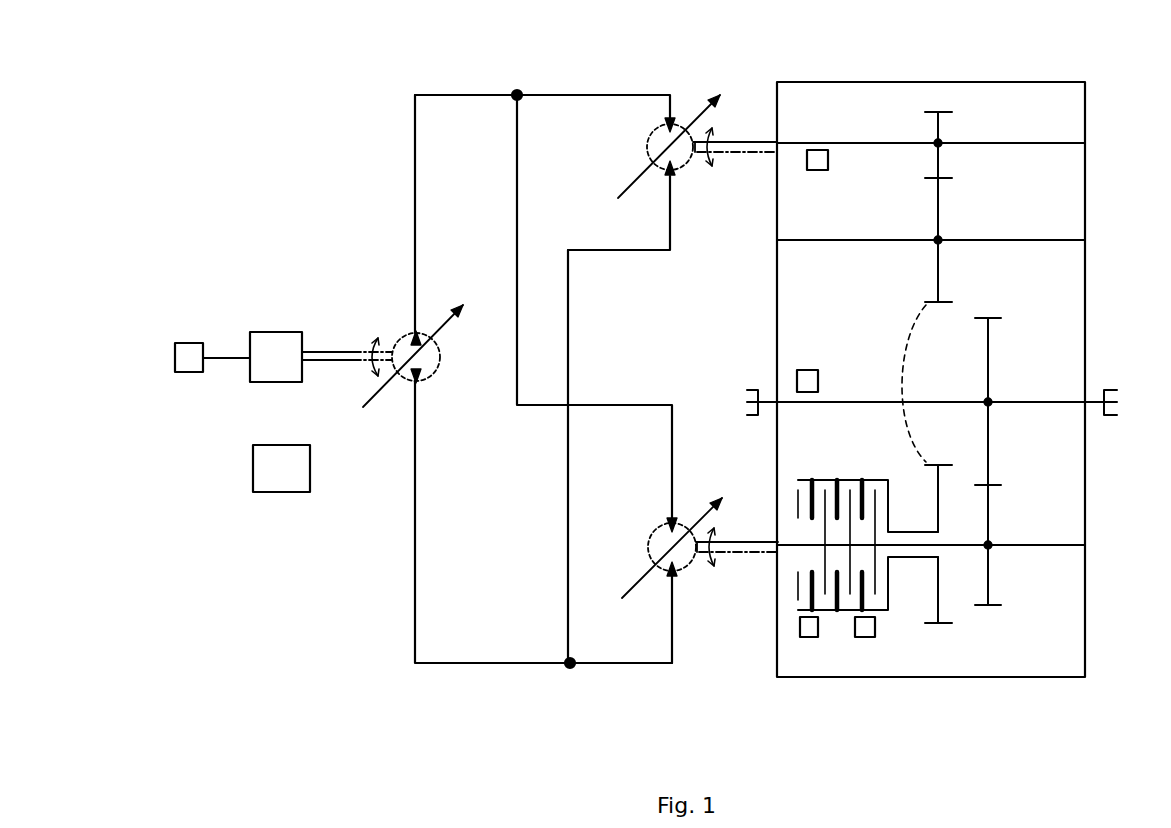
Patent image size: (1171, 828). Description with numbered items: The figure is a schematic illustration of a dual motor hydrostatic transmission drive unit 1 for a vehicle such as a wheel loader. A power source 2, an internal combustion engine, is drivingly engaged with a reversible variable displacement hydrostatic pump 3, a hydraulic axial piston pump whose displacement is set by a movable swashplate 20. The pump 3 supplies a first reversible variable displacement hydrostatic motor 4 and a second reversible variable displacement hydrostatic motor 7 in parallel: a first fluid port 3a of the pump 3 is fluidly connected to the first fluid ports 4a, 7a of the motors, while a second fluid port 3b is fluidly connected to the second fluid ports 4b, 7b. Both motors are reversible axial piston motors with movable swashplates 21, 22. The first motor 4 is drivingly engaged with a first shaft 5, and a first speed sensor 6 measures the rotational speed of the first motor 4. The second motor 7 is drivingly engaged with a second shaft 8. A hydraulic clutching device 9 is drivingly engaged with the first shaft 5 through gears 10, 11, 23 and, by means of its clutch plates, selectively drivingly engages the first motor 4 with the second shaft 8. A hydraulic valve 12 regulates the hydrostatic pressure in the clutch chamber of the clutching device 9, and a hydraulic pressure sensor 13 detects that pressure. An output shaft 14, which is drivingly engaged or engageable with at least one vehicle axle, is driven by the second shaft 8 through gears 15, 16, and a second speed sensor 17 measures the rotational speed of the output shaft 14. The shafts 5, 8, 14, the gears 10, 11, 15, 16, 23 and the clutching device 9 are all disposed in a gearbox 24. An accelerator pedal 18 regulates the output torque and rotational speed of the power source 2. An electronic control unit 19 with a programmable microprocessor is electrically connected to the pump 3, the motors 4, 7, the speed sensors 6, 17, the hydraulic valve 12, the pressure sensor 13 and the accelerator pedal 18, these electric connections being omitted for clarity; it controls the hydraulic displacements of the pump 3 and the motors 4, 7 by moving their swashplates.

The dual motor hydrostatic transmission drive unit 1 is at (268, 142).
The power source 2 is at (280, 332).
The reversible variable displacement hydrostatic pump 3 is at (440, 370).
The first fluid port 3a is at (415, 330).
The second fluid port 3b is at (413, 384).
The first reversible variable displacement hydrostatic motor 4 is at (647, 135).
The first fluid port 4a is at (668, 122).
The second fluid port 4b is at (668, 175).
The first shaft 5 is at (850, 143).
The first speed sensor 6 is at (818, 170).
The second reversible variable displacement hydrostatic motor 7 is at (657, 523).
The first fluid port 7a is at (670, 520).
The second fluid port 7b is at (672, 570).
The second shaft 8 is at (1022, 543).
The hydraulic clutching device 9 is at (818, 478).
The gear 10 is at (942, 162).
The gear 11 is at (942, 273).
The hydraulic valve 12 is at (805, 637).
The hydraulic pressure sensor 13 is at (862, 637).
The output shaft 14 is at (1010, 400).
The gear 15 is at (987, 378).
The gear 16 is at (988, 525).
The second speed sensor 17 is at (807, 368).
The accelerator pedal 18 is at (188, 342).
The electronic control unit 19 is at (255, 470).
The movable swashplate 20 is at (441, 318).
The movable swashplate 21 is at (690, 115).
The movable swashplate 22 is at (700, 513).
The gear 23 is at (940, 508).
The gearbox 24 is at (1085, 207).